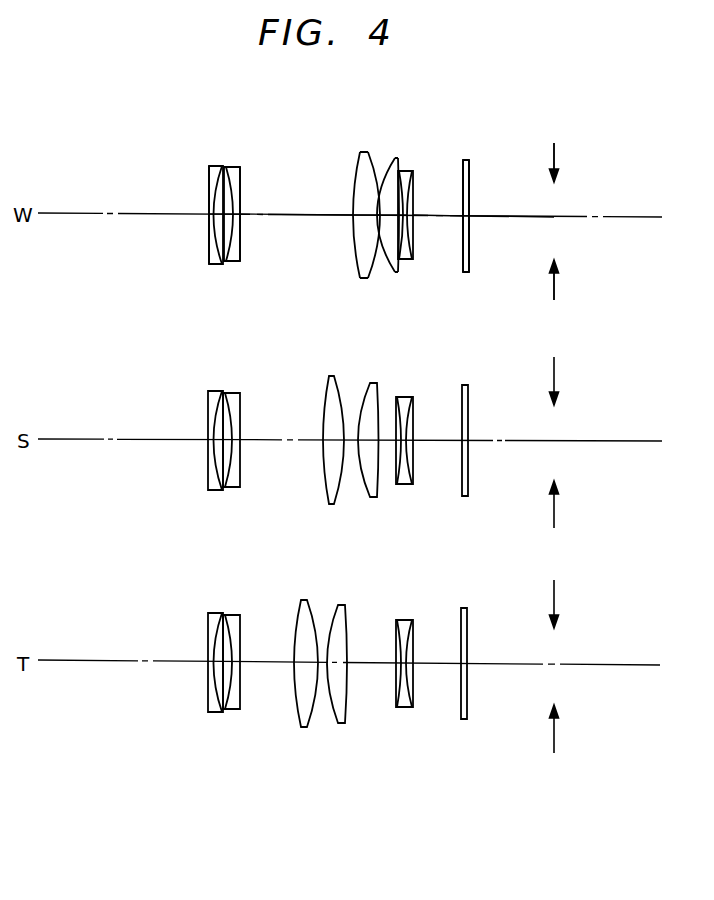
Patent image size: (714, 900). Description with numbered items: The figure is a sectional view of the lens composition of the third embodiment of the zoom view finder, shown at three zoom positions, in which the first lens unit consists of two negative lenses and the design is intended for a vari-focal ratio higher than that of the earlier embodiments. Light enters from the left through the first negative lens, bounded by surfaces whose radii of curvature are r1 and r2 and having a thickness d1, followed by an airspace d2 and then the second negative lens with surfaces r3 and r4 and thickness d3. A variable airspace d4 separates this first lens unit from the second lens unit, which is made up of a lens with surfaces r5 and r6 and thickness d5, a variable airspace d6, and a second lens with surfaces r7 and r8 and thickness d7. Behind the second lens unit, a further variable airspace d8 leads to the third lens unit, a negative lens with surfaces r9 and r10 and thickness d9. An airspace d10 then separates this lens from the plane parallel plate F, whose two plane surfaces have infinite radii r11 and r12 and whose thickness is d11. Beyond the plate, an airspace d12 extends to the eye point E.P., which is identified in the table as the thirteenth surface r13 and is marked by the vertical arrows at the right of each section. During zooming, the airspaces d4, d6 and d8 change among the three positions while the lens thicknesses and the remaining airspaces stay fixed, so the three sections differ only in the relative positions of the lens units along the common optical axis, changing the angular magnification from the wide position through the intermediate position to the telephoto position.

The radius of curvature of first lens surface r1 is at (209, 177).
The radius of curvature of second lens surface r2 is at (213, 172).
The radius of curvature of third lens surface r3 is at (233, 179).
The radius of curvature of fourth lens surface r4 is at (240, 180).
The radius of curvature of fifth lens surface r5 is at (355, 156).
The radius of curvature of sixth lens surface r6 is at (374, 178).
The radius of curvature of seventh lens surface r7 is at (384, 164).
The radius of curvature of eighth lens surface r8 is at (392, 212).
The radius of curvature of ninth lens surface r9 is at (407, 173).
The radius of curvature of tenth lens surface r10 is at (414, 193).
The radius of curvature of eleventh surface r11 is at (463, 167).
The radius of curvature of twelfth surface r12 is at (470, 168).
The eye point surface r13 is at (553, 150).
The thickness of first lens d1 is at (210, 215).
The airspace between first and second lenses d2 is at (220, 210).
The thickness of second lens d3 is at (235, 216).
The variable airspace after first lens unit d4 is at (287, 216).
The thickness of third lens d5 is at (354, 218).
The variable airspace within second lens unit d6 is at (377, 213).
The thickness of fourth lens d7 is at (385, 255).
The variable airspace after second lens unit d8 is at (401, 212).
The thickness of fifth lens d9 is at (405, 240).
The airspace between third lens unit and plane parallel plate d10 is at (424, 217).
The thickness of plane parallel plate d11 is at (470, 215).
The distance from plane parallel plate to eye point d12 is at (505, 218).
The plane parallel plate F is at (469, 263).
The eye point E.P. is at (554, 290).